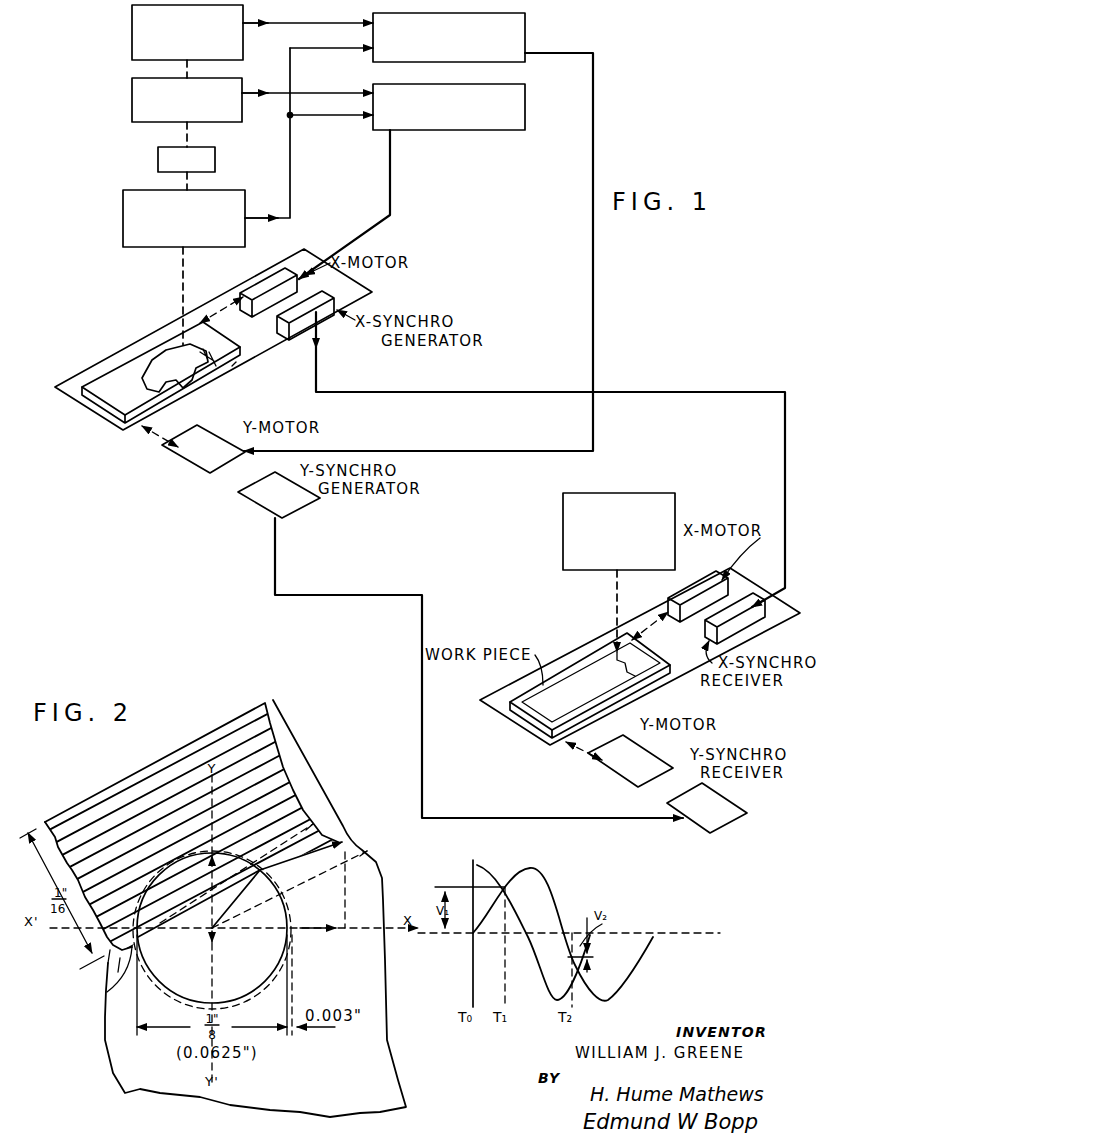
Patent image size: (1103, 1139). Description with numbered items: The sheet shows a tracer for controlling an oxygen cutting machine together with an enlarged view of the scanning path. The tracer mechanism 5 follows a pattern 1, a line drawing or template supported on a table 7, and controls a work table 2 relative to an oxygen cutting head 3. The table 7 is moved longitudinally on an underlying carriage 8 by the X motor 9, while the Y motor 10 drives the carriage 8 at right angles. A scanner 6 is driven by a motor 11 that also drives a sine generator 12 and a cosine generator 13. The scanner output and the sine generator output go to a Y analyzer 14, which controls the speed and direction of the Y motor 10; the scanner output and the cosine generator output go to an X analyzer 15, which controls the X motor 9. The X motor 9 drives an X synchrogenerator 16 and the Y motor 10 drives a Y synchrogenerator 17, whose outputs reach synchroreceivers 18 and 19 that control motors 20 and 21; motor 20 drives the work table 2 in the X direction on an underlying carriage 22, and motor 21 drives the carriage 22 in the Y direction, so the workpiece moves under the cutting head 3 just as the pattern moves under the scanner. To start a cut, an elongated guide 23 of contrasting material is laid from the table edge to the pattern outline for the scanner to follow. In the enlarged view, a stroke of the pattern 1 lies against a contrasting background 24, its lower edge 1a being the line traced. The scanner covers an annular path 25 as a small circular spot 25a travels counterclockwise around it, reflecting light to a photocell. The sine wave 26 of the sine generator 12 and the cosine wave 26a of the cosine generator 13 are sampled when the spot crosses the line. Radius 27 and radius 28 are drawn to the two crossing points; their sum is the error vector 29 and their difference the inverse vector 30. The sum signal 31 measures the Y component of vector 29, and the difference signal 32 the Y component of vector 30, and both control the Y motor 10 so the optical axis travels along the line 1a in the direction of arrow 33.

In FIG. 1, the pattern 1 is at (151, 349).
In FIG. 2, the pattern 1 is at (305, 762).
In FIG. 2, the lower edge of the pattern 1a is at (106, 992).
In FIG. 1, the work table 2 is at (492, 712).
In FIG. 1, the oxygen cutting head 3 is at (563, 524).
In FIG. 1, the tracer mechanism 5 is at (105, 122).
In FIG. 1, the scanner 6 is at (123, 216).
In FIG. 1, the table 7 is at (100, 381).
In FIG. 1, the carriage 8 is at (236, 363).
In FIG. 1, the X motor 9 is at (265, 285).
In FIG. 1, the Y motor 10 is at (178, 451).
In FIG. 1, the motor 11 is at (158, 160).
In FIG. 1, the sine generator 12 is at (132, 21).
In FIG. 1, the cosine generator 13 is at (132, 96).
In FIG. 1, the Y analyzer 14 is at (525, 35).
In FIG. 1, the X analyzer 15 is at (525, 104).
In FIG. 1, the X synchrogenerator 16 is at (320, 328).
In FIG. 1, the Y synchrogenerator 17 is at (250, 492).
In FIG. 1, the X synchroreceiver 18 is at (755, 622).
In FIG. 1, the Y synchroreceiver 19 is at (715, 830).
In FIG. 1, the X motor of work table 20 is at (706, 596).
In FIG. 1, the Y motor of work carriage 21 is at (600, 763).
In FIG. 1, the underlying carriage 22 is at (652, 683).
In FIG. 1, the elongated guide 23 is at (208, 367).
In FIG. 2, the contrasting background 24 is at (345, 894).
In FIG. 2, the scanned path 25 is at (290, 938).
In FIG. 2, the circular spot 25a is at (268, 984).
In FIG. 2, the sine wave 26 is at (558, 858).
In FIG. 2, the cosine wave 26a is at (538, 963).
In FIG. 2, the radius 27 is at (230, 912).
In FIG. 2, the radius 28 is at (168, 936).
In FIG. 2, the error vector 29 is at (196, 922).
In FIG. 2, the inverse vector 30 is at (344, 844).
In FIG. 2, the sum signal 31 is at (321, 821).
In FIG. 2, the difference signal 32 is at (367, 853).
In FIG. 2, the arrow 33 is at (110, 963).